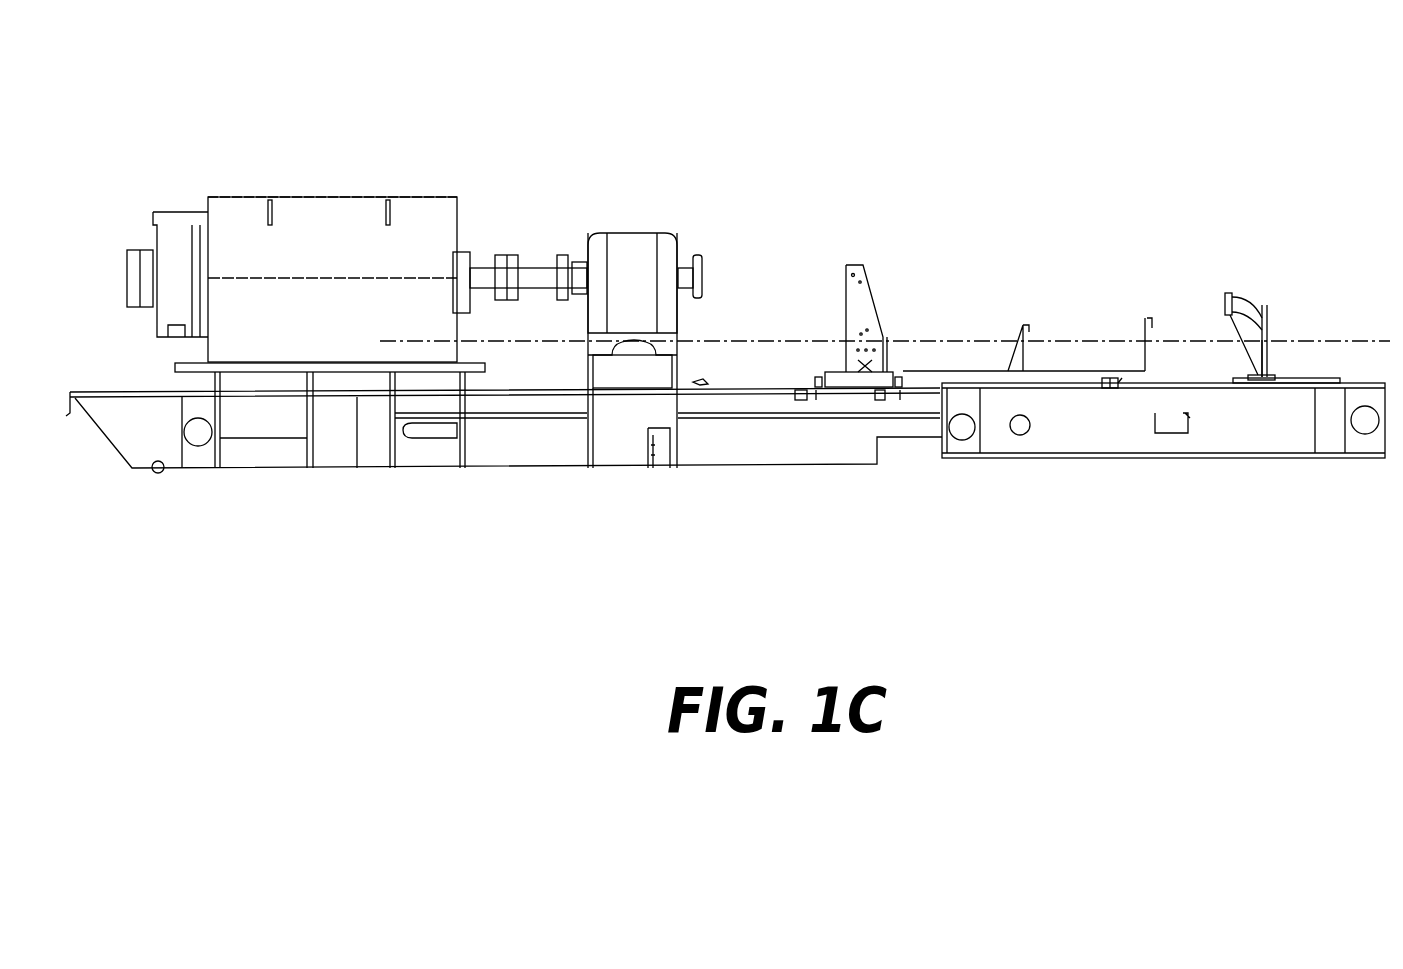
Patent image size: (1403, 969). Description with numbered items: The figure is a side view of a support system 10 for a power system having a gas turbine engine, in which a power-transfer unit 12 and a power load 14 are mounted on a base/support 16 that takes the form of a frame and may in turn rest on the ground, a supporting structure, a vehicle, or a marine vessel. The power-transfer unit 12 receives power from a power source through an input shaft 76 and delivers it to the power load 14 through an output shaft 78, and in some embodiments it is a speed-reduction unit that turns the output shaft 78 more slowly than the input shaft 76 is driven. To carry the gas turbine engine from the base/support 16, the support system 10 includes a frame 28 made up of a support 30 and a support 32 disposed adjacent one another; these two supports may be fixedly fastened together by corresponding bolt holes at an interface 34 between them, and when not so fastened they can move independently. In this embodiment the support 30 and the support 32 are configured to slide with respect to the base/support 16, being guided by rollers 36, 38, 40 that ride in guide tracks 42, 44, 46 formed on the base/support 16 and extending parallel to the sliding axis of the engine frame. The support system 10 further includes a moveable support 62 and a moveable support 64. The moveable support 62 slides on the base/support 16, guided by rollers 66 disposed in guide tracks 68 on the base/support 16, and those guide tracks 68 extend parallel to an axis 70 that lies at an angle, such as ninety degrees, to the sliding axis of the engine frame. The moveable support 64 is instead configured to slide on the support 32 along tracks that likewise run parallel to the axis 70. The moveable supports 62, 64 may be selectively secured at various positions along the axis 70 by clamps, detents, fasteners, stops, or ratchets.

The support system 10 is at (913, 134).
The power-transfer unit 12 is at (623, 233).
The power load 14 is at (352, 197).
The base/support 16 is at (1170, 435).
The frame 28 is at (965, 298).
The support 30 is at (840, 372).
The support 32 is at (1145, 343).
The interface 34 is at (887, 372).
The roller 36 is at (816, 392).
The roller 38 is at (900, 392).
The roller 40 is at (1110, 390).
The guide track 42 is at (812, 377).
The guide track 44 is at (903, 380).
The guide track 46 is at (1120, 383).
The moveable support 62 is at (1267, 320).
The moveable support 64 is at (1024, 330).
The rollers 66 is at (1272, 373).
The guide tracks 68 is at (1302, 378).
The axis 70 is at (1337, 338).
The input shaft 76 is at (683, 250).
The output shaft 78 is at (583, 252).